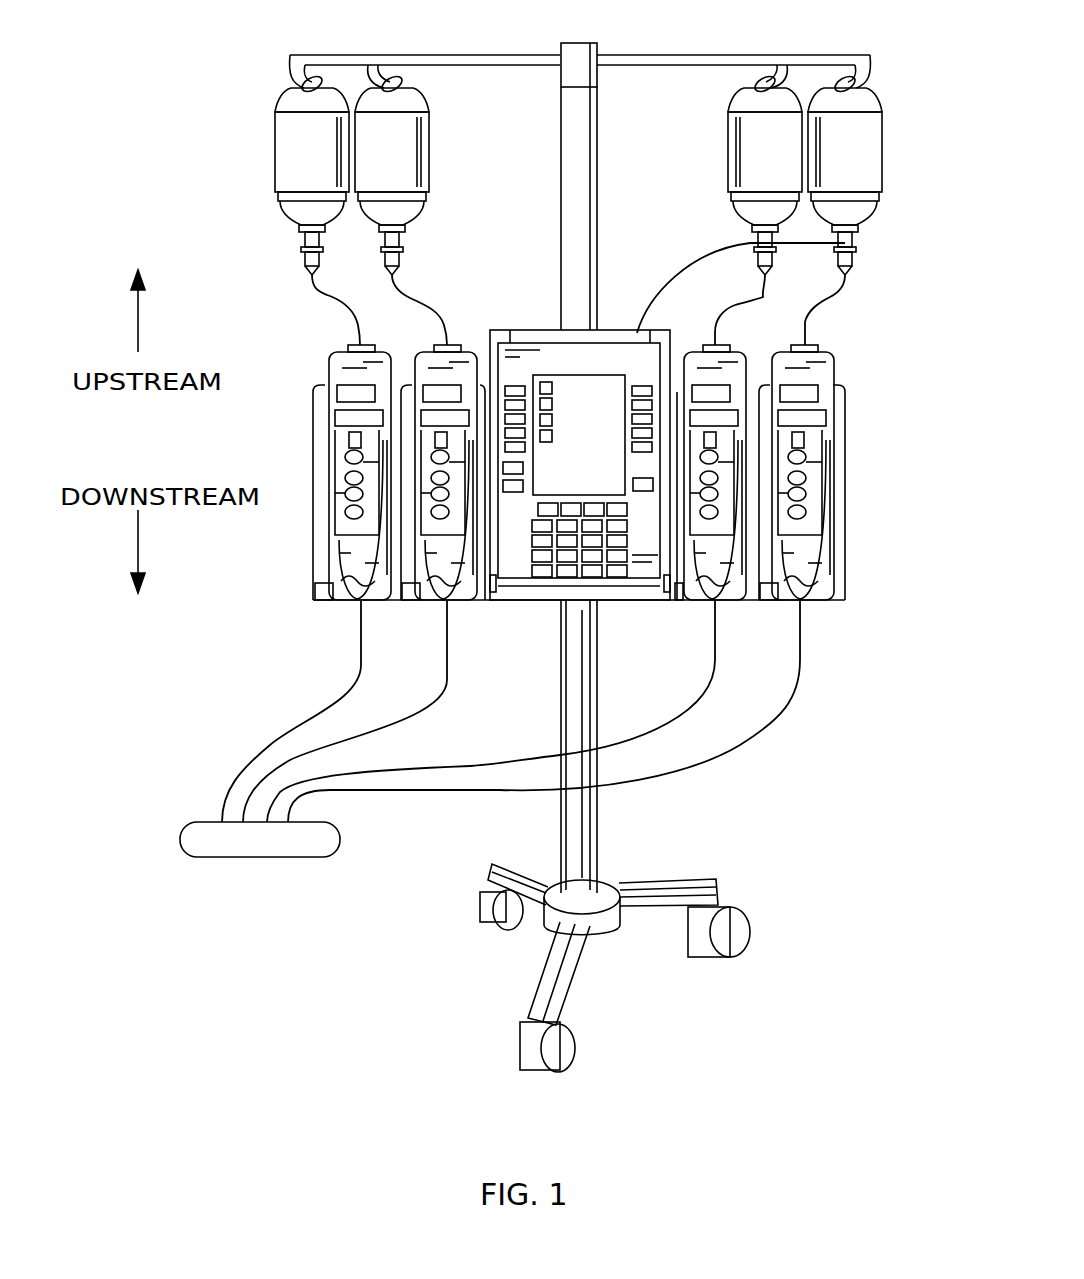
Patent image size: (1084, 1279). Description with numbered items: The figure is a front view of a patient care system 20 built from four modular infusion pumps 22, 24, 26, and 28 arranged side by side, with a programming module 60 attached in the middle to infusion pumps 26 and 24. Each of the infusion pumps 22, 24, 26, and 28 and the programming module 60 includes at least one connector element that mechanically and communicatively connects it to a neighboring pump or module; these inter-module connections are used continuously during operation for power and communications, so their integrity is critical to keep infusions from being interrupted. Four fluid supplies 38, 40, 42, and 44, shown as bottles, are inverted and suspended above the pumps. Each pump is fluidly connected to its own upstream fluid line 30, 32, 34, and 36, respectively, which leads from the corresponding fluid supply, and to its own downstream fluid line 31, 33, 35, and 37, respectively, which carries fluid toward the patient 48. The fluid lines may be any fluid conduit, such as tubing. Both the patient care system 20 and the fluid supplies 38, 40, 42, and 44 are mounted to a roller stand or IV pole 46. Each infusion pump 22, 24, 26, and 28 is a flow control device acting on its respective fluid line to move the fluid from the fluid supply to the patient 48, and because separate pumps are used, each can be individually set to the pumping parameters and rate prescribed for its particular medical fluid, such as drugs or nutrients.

The patient care system 20 is at (92, 88).
The infusion pump 22 is at (834, 347).
The infusion pump 24 is at (702, 347).
The infusion pump 26 is at (422, 347).
The infusion pump 28 is at (328, 347).
The upstream fluid line 30 is at (852, 292).
The downstream fluid line 31 is at (800, 692).
The upstream fluid line 32 is at (758, 292).
The downstream fluid line 33 is at (700, 688).
The upstream fluid line 34 is at (426, 302).
The downstream fluid line 35 is at (428, 687).
The upstream fluid line 36 is at (314, 292).
The downstream fluid line 37 is at (342, 690).
The fluid supply 38 is at (882, 162).
The fluid supply 40 is at (728, 152).
The fluid supply 42 is at (430, 150).
The fluid supply 44 is at (277, 135).
The IV pole 46 is at (597, 840).
The patient 48 is at (182, 838).
The programming module 60 is at (543, 331).